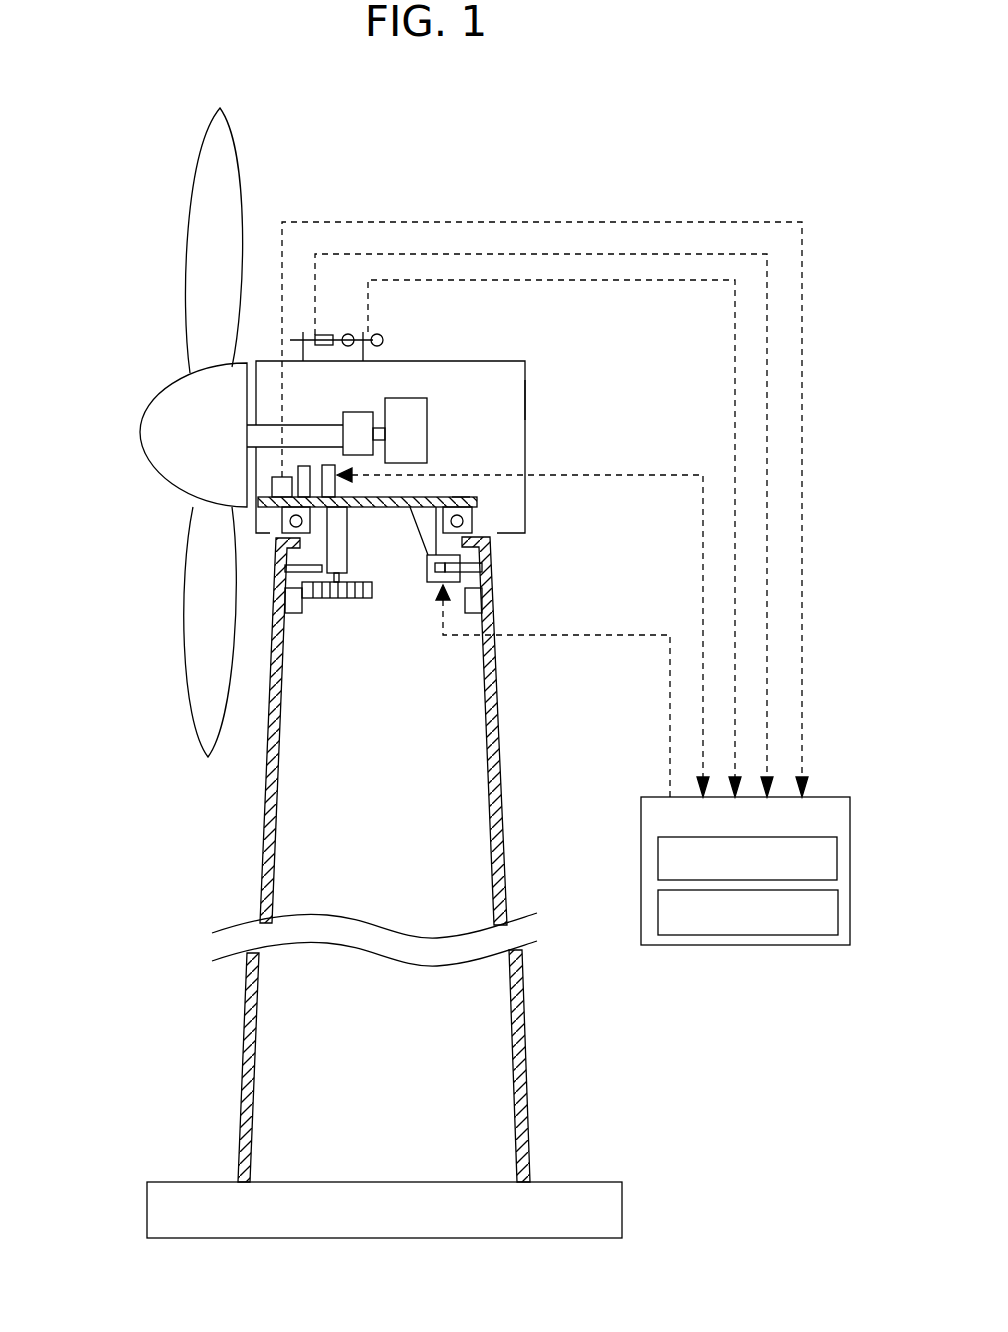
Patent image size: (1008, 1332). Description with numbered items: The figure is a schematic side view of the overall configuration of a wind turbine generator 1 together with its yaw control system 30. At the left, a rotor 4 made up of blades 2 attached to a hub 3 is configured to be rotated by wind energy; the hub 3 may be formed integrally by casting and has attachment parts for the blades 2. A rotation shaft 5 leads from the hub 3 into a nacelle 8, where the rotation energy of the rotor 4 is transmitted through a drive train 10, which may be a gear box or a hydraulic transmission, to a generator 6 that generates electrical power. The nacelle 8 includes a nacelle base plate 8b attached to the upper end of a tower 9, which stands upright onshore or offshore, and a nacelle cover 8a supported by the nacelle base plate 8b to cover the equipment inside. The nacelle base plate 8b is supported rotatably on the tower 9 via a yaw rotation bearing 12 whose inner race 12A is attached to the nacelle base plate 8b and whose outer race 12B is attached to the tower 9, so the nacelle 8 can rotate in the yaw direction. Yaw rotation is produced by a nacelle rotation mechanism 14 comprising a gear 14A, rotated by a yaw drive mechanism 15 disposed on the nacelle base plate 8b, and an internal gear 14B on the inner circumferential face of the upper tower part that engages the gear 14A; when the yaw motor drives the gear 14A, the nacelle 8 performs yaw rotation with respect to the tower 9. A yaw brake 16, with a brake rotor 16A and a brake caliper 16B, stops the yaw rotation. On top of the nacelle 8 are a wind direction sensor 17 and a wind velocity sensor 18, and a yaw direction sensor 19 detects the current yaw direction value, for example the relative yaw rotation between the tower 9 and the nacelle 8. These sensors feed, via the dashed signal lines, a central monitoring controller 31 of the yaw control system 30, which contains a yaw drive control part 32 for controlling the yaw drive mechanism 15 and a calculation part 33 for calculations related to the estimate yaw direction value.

The wind turbine generator 1 is at (74, 283).
The blade 2 is at (196, 175).
The hub 3 is at (139, 382).
The rotor 4 is at (149, 432).
The rotation shaft 5 is at (276, 420).
The generator 6 is at (410, 398).
The nacelle 8 is at (424, 445).
The nacelle cover 8a is at (527, 427).
The nacelle base plate 8b is at (452, 496).
The tower 9 is at (497, 672).
The drive train 10 is at (366, 412).
The yaw rotation bearing 12 is at (450, 510).
The inner race 12A is at (478, 500).
The outer race 12B is at (474, 520).
The nacelle rotation mechanism 14 is at (209, 564).
The gear 14A is at (300, 583).
The internal gear 14B is at (290, 598).
The yaw drive mechanism 15 is at (329, 464).
The yaw brake 16 is at (510, 560).
The brake rotor 16A is at (490, 560).
The brake caliper 16B is at (499, 588).
The wind direction sensor 17 is at (327, 334).
The wind velocity sensor 18 is at (380, 333).
The yaw direction sensor 19 is at (270, 485).
The yaw control system 30 is at (717, 896).
The central monitoring controller 31 is at (717, 842).
The yaw drive control part 32 is at (658, 858).
The calculation part 33 is at (658, 914).